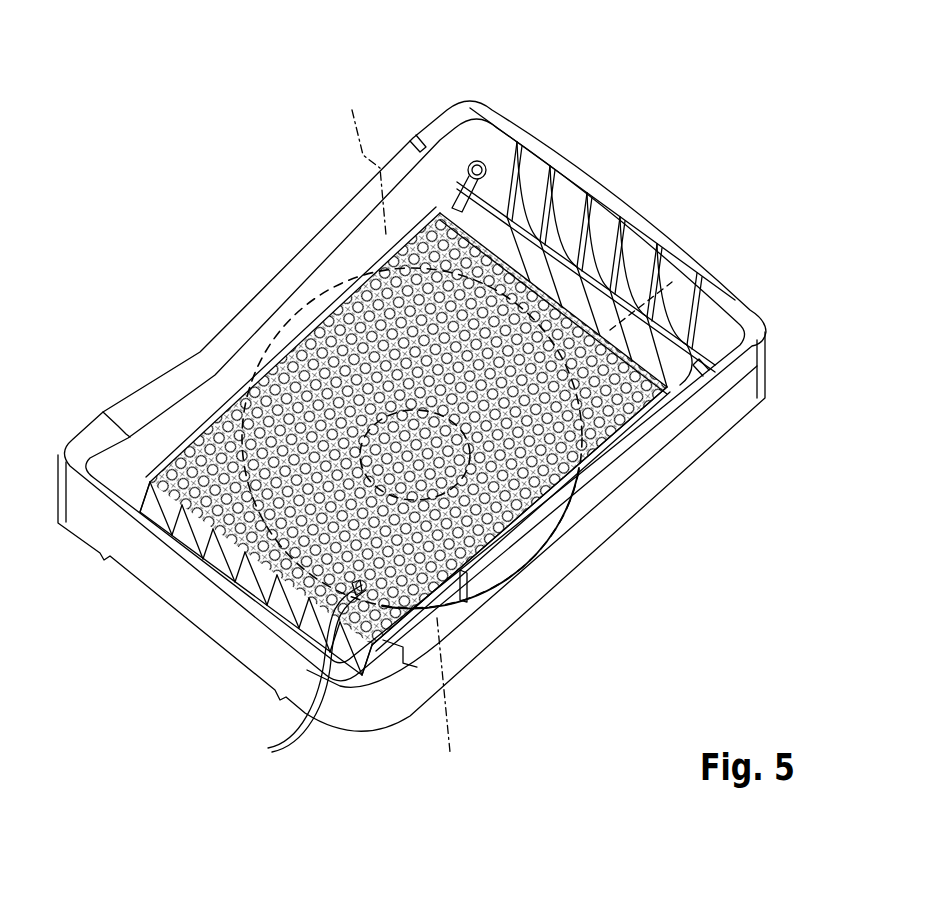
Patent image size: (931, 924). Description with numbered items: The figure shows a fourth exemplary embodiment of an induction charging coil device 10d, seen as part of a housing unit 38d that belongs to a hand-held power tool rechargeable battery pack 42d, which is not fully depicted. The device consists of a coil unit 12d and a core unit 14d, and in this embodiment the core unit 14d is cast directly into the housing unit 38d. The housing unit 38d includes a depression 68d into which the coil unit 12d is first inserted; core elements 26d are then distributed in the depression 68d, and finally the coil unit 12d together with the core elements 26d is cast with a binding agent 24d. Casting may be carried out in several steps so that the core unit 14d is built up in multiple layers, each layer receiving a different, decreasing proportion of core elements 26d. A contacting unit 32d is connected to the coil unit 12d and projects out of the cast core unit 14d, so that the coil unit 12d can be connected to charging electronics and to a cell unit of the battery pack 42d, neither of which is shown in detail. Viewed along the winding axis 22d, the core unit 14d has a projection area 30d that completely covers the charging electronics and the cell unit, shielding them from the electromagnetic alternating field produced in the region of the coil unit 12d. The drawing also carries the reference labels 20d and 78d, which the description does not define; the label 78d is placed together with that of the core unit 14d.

The hand-held power tool rechargeable battery pack 42d is at (492, 60).
The induction charging coil device 10d is at (668, 377).
The housing unit 38d is at (553, 147).
The core unit 14d is at (436, 408).
The cell structure 78d is at (584, 315).
The projection area 30d is at (349, 334).
The grid 20d is at (283, 388).
The binding agent 24d is at (586, 410).
The core elements 26d is at (585, 489).
The coil unit 12d is at (540, 520).
The winding axis 22d is at (379, 425).
The depression 68d is at (705, 250).
The contacting unit 32d is at (292, 677).